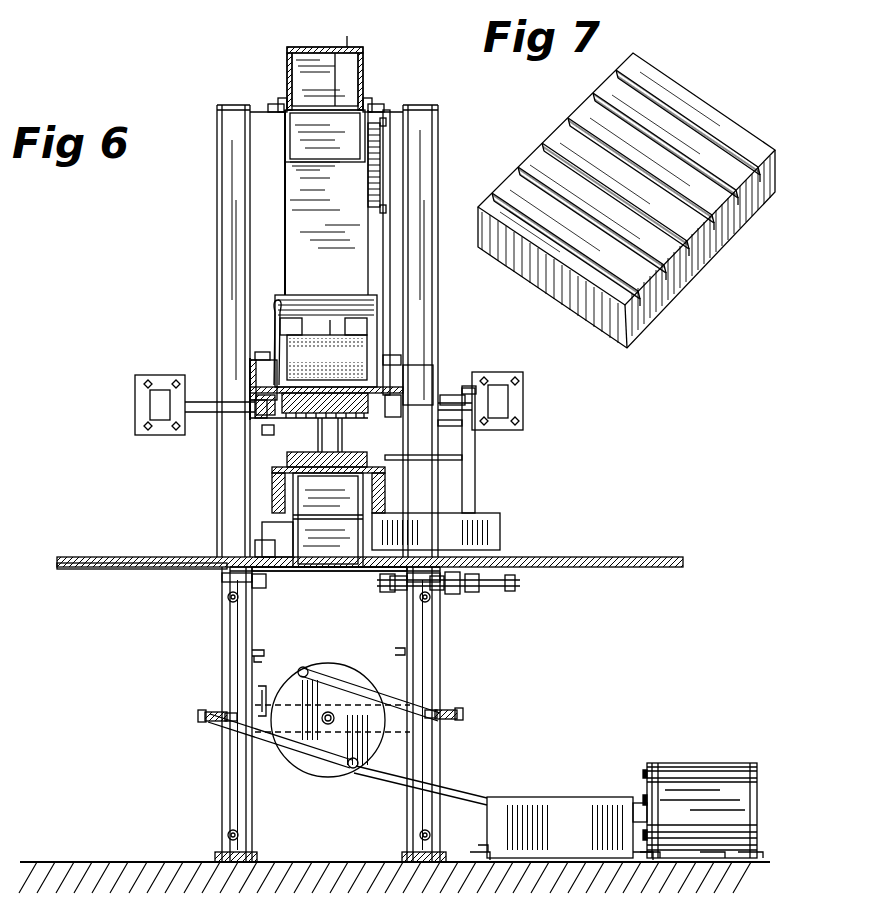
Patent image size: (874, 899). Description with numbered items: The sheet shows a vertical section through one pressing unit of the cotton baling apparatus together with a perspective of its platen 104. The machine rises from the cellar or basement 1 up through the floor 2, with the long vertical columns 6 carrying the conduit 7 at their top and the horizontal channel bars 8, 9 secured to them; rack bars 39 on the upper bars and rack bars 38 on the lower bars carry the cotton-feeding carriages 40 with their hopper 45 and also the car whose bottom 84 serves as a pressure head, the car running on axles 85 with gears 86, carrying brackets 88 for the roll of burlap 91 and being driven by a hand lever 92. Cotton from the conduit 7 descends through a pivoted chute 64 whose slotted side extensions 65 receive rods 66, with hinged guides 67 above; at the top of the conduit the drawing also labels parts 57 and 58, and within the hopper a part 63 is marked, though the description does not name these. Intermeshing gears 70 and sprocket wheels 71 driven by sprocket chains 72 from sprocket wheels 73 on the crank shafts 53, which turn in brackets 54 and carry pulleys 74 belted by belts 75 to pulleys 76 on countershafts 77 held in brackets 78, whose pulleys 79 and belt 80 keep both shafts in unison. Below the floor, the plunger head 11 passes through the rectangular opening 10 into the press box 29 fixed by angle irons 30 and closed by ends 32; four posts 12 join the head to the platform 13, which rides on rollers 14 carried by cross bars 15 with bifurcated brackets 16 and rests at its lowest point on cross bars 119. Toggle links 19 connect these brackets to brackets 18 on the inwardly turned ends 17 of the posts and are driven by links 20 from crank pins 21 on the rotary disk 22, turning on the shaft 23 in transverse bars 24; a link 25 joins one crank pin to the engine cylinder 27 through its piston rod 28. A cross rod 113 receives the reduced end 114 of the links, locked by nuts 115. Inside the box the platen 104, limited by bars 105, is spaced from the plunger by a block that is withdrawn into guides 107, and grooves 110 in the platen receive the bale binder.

In FIG. 6, the cellar or basement 1 is at (394, 787).
In FIG. 6, the floor 2 is at (623, 557).
In FIG. 6, the vertical columns 6 is at (244, 626).
In FIG. 6, the conduit 7 is at (345, 32).
In FIG. 6, the horizontal channel bars 8 is at (252, 372).
In FIG. 6, the horizontal channel bars 9 is at (254, 405).
In FIG. 6, the rectangular openings 10 is at (220, 568).
In FIG. 6, the plunger head 11 is at (328, 520).
In FIG. 6, the posts 12 is at (326, 544).
In FIG. 6, the platform 13 is at (333, 571).
In FIG. 6, the rollers 14 is at (258, 578).
In FIG. 6, the cross bars 15 is at (238, 578).
In FIG. 6, the bifurcated brackets 16 is at (228, 598).
In FIG. 6, the inwardly turned ends 17 is at (257, 850).
In FIG. 6, the brackets 18 is at (228, 835).
In FIG. 6, the toggle links 19 is at (228, 650).
In FIG. 6, the links 20 is at (362, 690).
In FIG. 6, the crank pins 21 is at (304, 667).
In FIG. 6, the rotary disk 22 is at (325, 762).
In FIG. 6, the shaft 23 is at (335, 718).
In FIG. 6, the transverse bars 24 is at (284, 699).
In FIG. 6, the link 25 is at (455, 786).
In FIG. 6, the engine cylinder 27 is at (700, 763).
In FIG. 6, the piston rod 28 is at (640, 797).
In FIG. 6, the press box 29 is at (300, 524).
In FIG. 6, the angle irons 30 is at (262, 540).
In FIG. 6, the ends 32 is at (278, 490).
In FIG. 6, the rack bars 38 is at (258, 418).
In FIG. 6, the rack bars 39 is at (258, 352).
In FIG. 6, the carriages 40 is at (290, 458).
In FIG. 6, the hopper 45 is at (326, 300).
In FIG. 6, the crank shafts 53 is at (448, 395).
In FIG. 6, the brackets 54 is at (158, 406).
In FIG. 6, the hopper wall 57 is at (335, 100).
In FIG. 6, the hopper top 58 is at (345, 62).
In FIG. 6, the material charge 63 is at (327, 357).
In FIG. 6, the pivoted chutes 64 is at (292, 220).
In FIG. 6, the slotted side extensions 65 is at (281, 98).
In FIG. 6, the rods 66 is at (272, 104).
In FIG. 6, the hinged guides 67 is at (305, 138).
In FIG. 6, the intermeshing gears 70 is at (380, 124).
In FIG. 6, the sprocket wheels 71 is at (383, 138).
In FIG. 6, the sprocket chains 72 is at (390, 265).
In FIG. 6, the sprocket wheels 73 is at (400, 430).
In FIG. 6, the pulleys 74 is at (468, 386).
In FIG. 6, the belts 75 is at (475, 490).
In FIG. 6, the pulleys 76 is at (384, 592).
In FIG. 6, the countershafts 77 is at (520, 583).
In FIG. 6, the brackets 78 is at (512, 591).
In FIG. 6, the pulleys 79 is at (472, 592).
In FIG. 6, the belt 80 is at (437, 590).
In FIG. 6, the car bottom 84 is at (300, 414).
In FIG. 6, the axles 85 is at (295, 321).
In FIG. 6, the gears 86 is at (265, 430).
In FIG. 6, the brackets 88 is at (353, 321).
In FIG. 6, the roll of burlap 91 is at (329, 330).
In FIG. 6, the hand lever 92 is at (272, 322).
In FIG. 6, the platen 104 is at (395, 458).
In FIG. 7, the platen 104 is at (640, 318).
In FIG. 6, the bars 105 is at (328, 522).
In FIG. 6, the guides 107 is at (478, 540).
In FIG. 6, the grooves 110 is at (350, 440).
In FIG. 7, the grooves 110 is at (715, 224).
In FIG. 6, the cross rod 113 is at (202, 712).
In FIG. 6, the reduced end 114 is at (228, 716).
In FIG. 6, the nuts 115 is at (212, 720).
In FIG. 6, the cross bars 119 is at (262, 652).